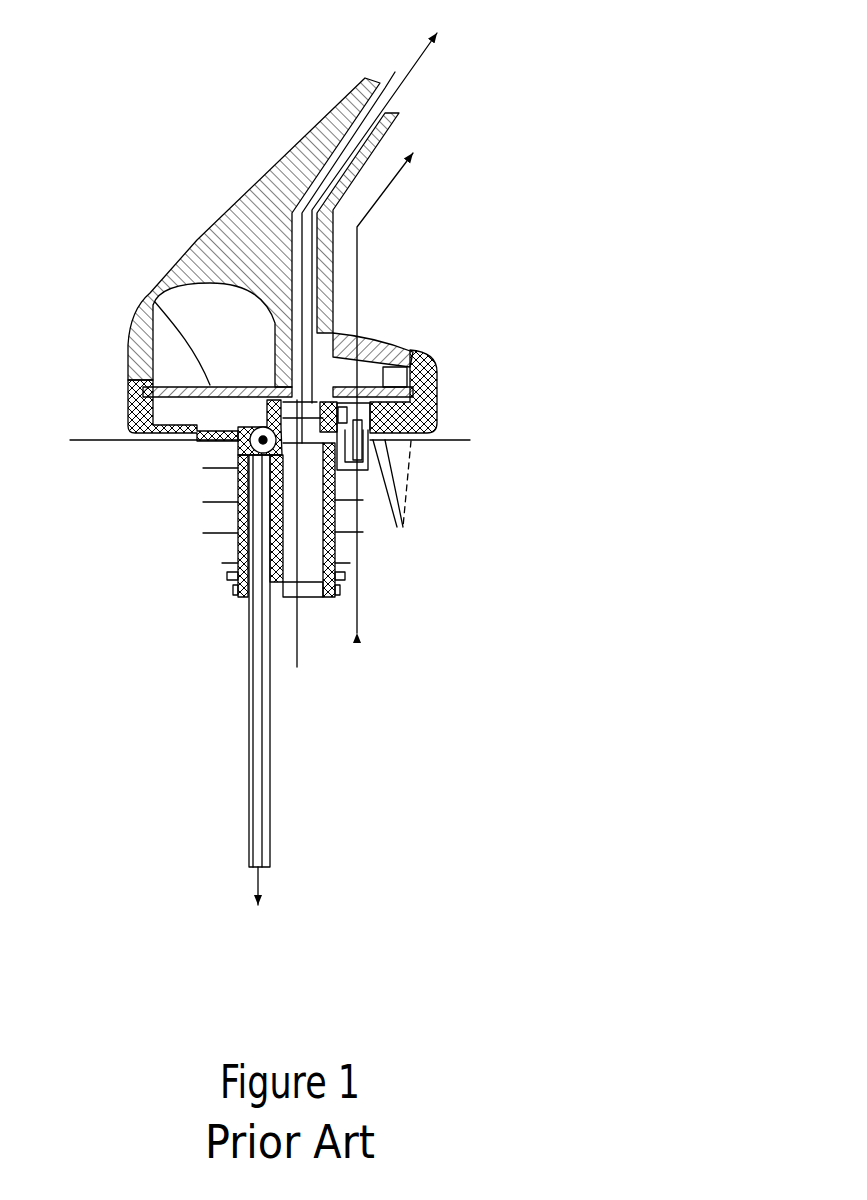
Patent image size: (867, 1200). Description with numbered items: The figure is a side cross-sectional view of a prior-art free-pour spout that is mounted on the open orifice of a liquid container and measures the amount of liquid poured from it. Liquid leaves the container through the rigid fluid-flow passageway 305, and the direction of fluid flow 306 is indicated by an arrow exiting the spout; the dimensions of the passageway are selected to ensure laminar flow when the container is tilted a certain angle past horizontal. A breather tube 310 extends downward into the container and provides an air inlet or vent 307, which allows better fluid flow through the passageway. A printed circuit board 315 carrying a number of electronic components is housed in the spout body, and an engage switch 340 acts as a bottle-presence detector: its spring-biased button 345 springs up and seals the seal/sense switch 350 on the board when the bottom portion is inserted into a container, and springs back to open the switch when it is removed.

The rigid fluid-flow passageway 305 is at (363, 123).
The direction of fluid flow 306 is at (403, 324).
The air inlet (vent) 307 is at (256, 906).
The breather tube 310 is at (248, 737).
The printed circuit board (PCB) 315 is at (152, 297).
The engage switch 340 is at (397, 527).
The spring-biased button 345 is at (405, 530).
The seal/sense switch 350 is at (414, 493).